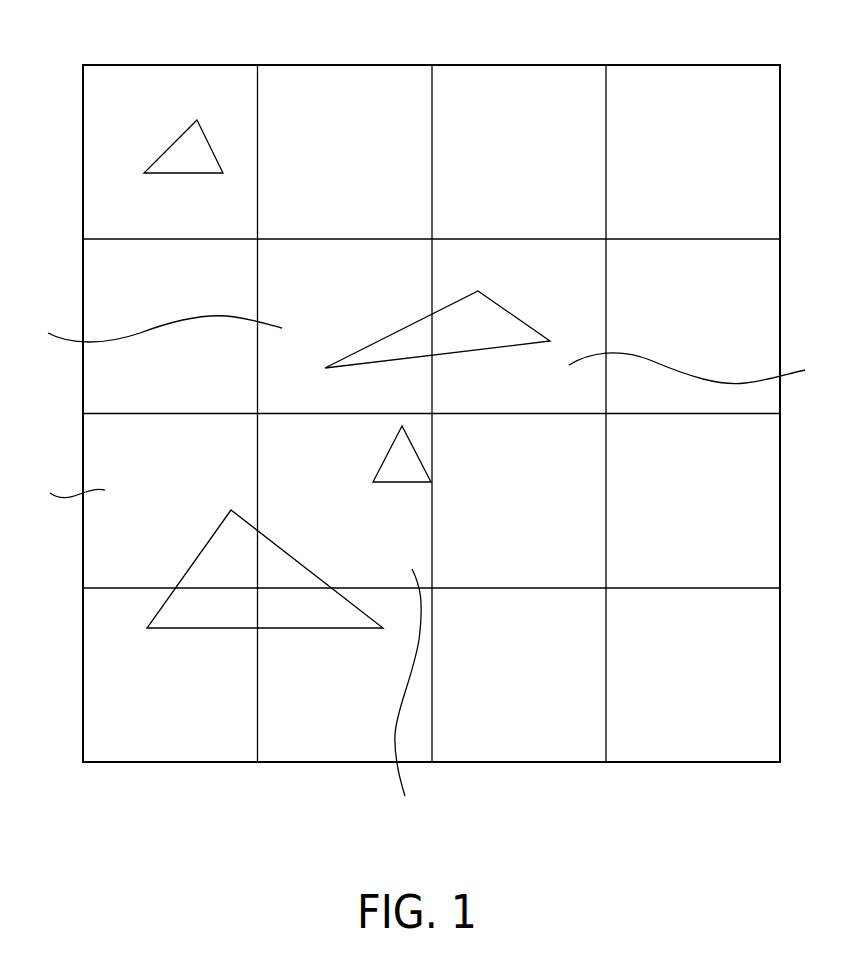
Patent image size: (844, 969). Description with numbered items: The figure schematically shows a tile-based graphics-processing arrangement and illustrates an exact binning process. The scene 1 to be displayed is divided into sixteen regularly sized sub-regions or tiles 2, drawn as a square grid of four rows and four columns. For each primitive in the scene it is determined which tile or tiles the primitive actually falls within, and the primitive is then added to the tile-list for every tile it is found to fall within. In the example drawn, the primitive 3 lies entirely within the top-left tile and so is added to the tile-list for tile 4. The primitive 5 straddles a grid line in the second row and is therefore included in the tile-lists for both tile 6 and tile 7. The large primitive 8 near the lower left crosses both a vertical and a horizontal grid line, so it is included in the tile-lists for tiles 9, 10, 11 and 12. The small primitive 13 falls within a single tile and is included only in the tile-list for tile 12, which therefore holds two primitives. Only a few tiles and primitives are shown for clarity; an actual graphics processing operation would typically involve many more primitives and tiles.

The scene 1 is at (73, 50).
The tiles 2 is at (519, 64).
The primitive 3 is at (171, 145).
The tile 4 is at (177, 64).
The primitive 5 is at (406, 324).
The tile 6 is at (155, 329).
The tile 7 is at (694, 369).
The primitive 8 is at (310, 630).
The tile 9 is at (150, 750).
The tile 10 is at (62, 493).
The tile 11 is at (368, 750).
The tile 12 is at (408, 696).
The primitive 13 is at (421, 457).